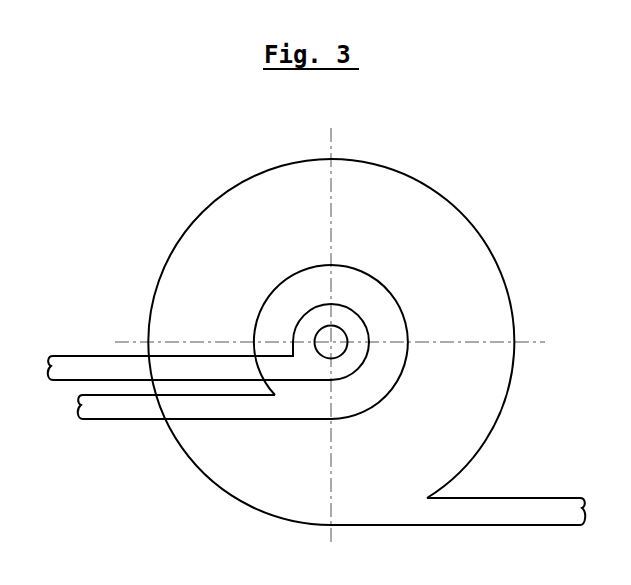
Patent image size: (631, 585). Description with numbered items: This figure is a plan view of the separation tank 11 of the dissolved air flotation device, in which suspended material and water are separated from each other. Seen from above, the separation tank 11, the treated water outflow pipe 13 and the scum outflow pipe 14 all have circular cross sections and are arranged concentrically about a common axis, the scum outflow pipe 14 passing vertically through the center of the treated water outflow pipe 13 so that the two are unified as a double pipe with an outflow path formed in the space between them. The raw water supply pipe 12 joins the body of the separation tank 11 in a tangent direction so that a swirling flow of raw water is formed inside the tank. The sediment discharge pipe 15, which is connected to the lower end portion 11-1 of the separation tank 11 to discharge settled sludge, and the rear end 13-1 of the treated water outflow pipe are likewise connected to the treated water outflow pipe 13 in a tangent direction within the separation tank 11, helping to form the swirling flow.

The separation tank 11 is at (507, 282).
The lower end portion of the separation tank 11-1 is at (352, 267).
The raw water supply pipe 12 is at (537, 494).
The treated water outflow pipe 13 is at (370, 330).
The rear end of the treated water outflow pipe 13-1 is at (107, 422).
The scum outflow pipe 14 is at (316, 331).
The sediment discharge pipe 15 is at (72, 352).